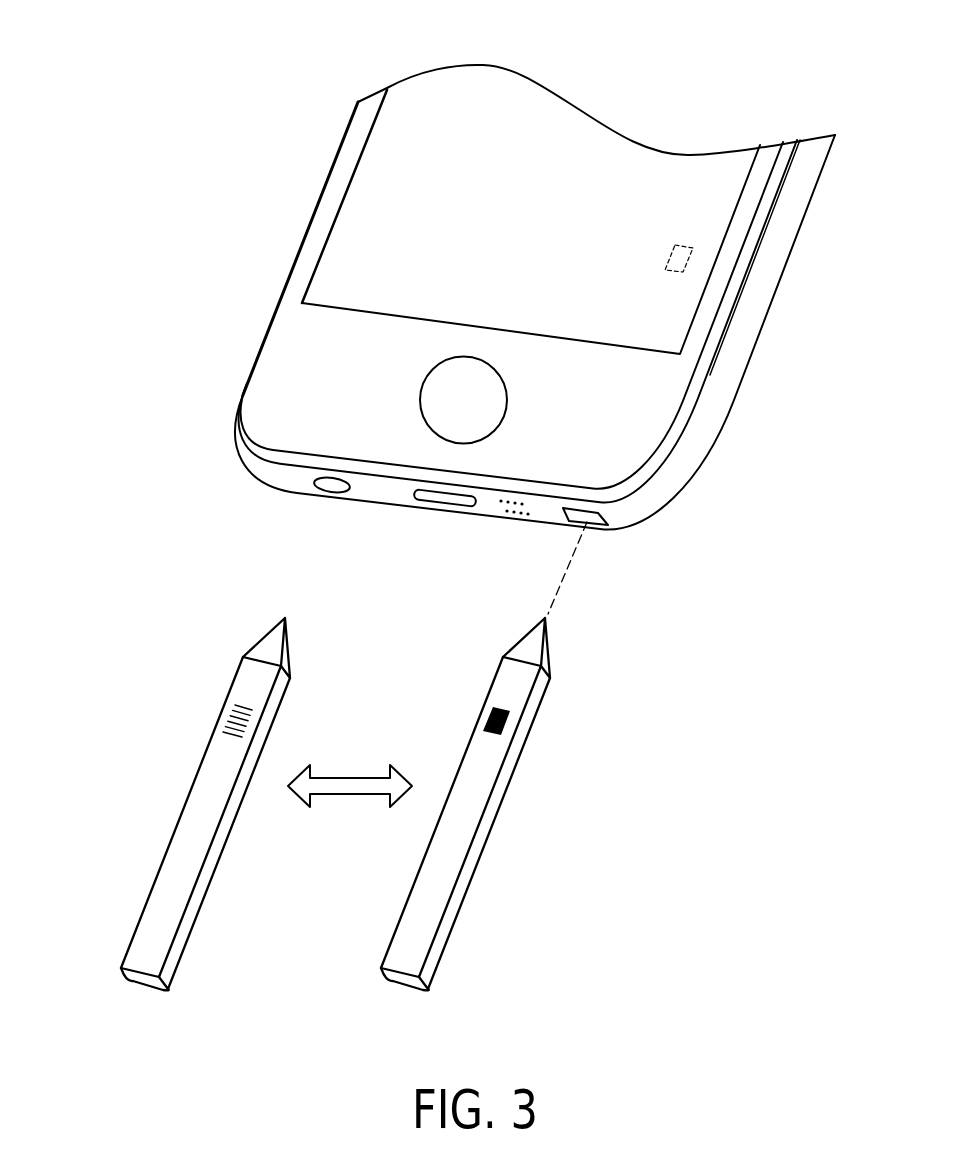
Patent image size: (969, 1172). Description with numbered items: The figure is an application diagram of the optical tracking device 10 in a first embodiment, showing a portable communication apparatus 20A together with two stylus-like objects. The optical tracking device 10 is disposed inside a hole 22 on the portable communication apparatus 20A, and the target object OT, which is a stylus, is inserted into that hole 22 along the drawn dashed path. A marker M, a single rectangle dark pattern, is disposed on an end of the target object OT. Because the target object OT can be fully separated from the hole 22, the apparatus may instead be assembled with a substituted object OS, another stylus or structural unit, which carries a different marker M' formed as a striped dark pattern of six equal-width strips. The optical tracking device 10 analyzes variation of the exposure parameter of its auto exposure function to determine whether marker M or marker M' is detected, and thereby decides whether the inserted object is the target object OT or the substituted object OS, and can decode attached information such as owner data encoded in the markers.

The portable communication apparatus 20A is at (458, 92).
The optical tracking device 10 is at (683, 258).
The hole 22 is at (600, 521).
The marker M' is at (197, 702).
The marker M is at (550, 733).
The substituted object OS is at (174, 804).
The target object OT is at (499, 804).